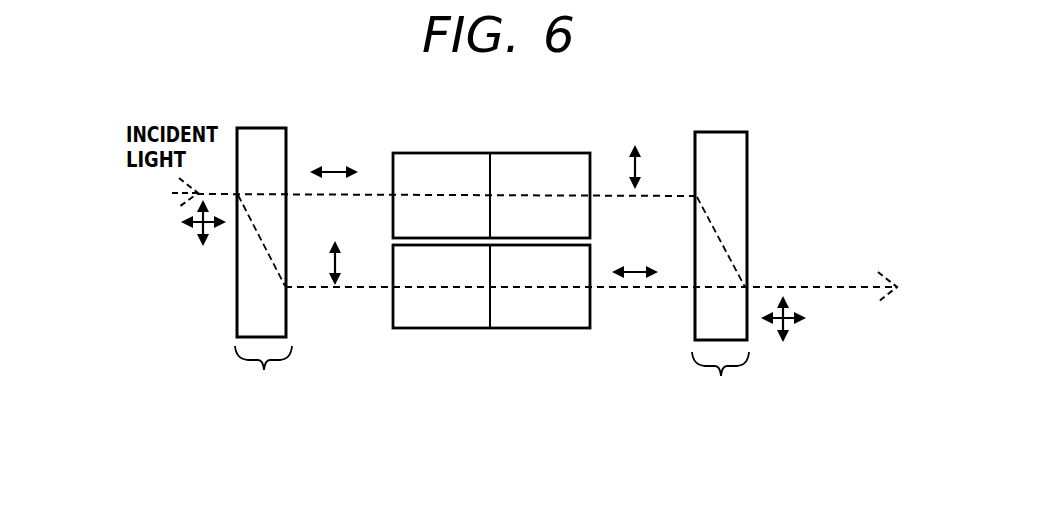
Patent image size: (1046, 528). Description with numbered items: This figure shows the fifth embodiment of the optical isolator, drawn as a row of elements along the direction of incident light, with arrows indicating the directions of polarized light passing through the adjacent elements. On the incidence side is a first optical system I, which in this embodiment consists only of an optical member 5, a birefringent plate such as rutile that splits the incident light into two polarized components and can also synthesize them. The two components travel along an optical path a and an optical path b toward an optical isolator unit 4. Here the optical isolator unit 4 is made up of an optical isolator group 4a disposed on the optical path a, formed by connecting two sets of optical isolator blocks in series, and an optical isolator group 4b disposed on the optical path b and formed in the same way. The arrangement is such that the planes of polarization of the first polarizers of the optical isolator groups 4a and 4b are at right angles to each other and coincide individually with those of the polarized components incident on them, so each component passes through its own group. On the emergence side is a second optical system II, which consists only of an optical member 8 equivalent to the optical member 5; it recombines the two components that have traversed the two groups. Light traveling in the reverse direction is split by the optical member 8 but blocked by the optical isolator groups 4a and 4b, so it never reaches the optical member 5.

The optical member 5 is at (270, 128).
The optical isolator unit 4 is at (491, 235).
The optical isolator group 4a is at (410, 153).
The optical isolator group 4b is at (566, 330).
The optical member 8 is at (731, 132).
The optical path a is at (447, 192).
The optical path b is at (443, 285).
The first optical system I is at (263, 375).
The second optical system II is at (720, 381).